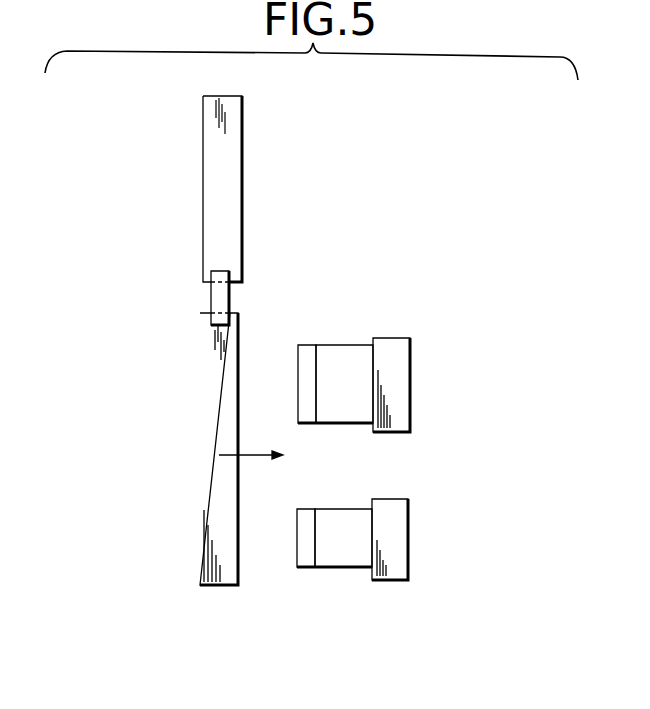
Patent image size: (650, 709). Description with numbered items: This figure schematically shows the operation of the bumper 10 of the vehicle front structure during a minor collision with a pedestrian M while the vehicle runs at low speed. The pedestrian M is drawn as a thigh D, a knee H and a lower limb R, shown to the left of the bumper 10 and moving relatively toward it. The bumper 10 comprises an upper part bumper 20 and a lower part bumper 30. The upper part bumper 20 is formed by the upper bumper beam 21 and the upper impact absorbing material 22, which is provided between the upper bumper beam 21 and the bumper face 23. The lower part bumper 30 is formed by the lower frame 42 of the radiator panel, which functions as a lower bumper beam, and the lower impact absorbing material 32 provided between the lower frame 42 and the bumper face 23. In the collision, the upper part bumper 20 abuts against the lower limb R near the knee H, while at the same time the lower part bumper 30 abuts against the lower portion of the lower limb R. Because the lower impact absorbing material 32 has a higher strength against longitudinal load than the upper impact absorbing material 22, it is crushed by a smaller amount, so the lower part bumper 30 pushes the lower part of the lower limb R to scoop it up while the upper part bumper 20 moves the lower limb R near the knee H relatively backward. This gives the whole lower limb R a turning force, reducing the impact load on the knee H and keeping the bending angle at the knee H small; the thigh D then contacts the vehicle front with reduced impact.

The thigh D is at (193, 99).
The pedestrian M is at (154, 203).
The knee H is at (211, 297).
The lower limb R is at (188, 452).
The bumper 10 is at (452, 236).
The upper part bumper 20 is at (419, 345).
The upper bumper beam 21 is at (400, 345).
The upper impact absorbing material 22 is at (352, 355).
The bumper face 23 is at (305, 355).
The lower part bumper 30 is at (361, 604).
The lower impact absorbing material 32 is at (325, 557).
The lower frame 42 is at (393, 568).